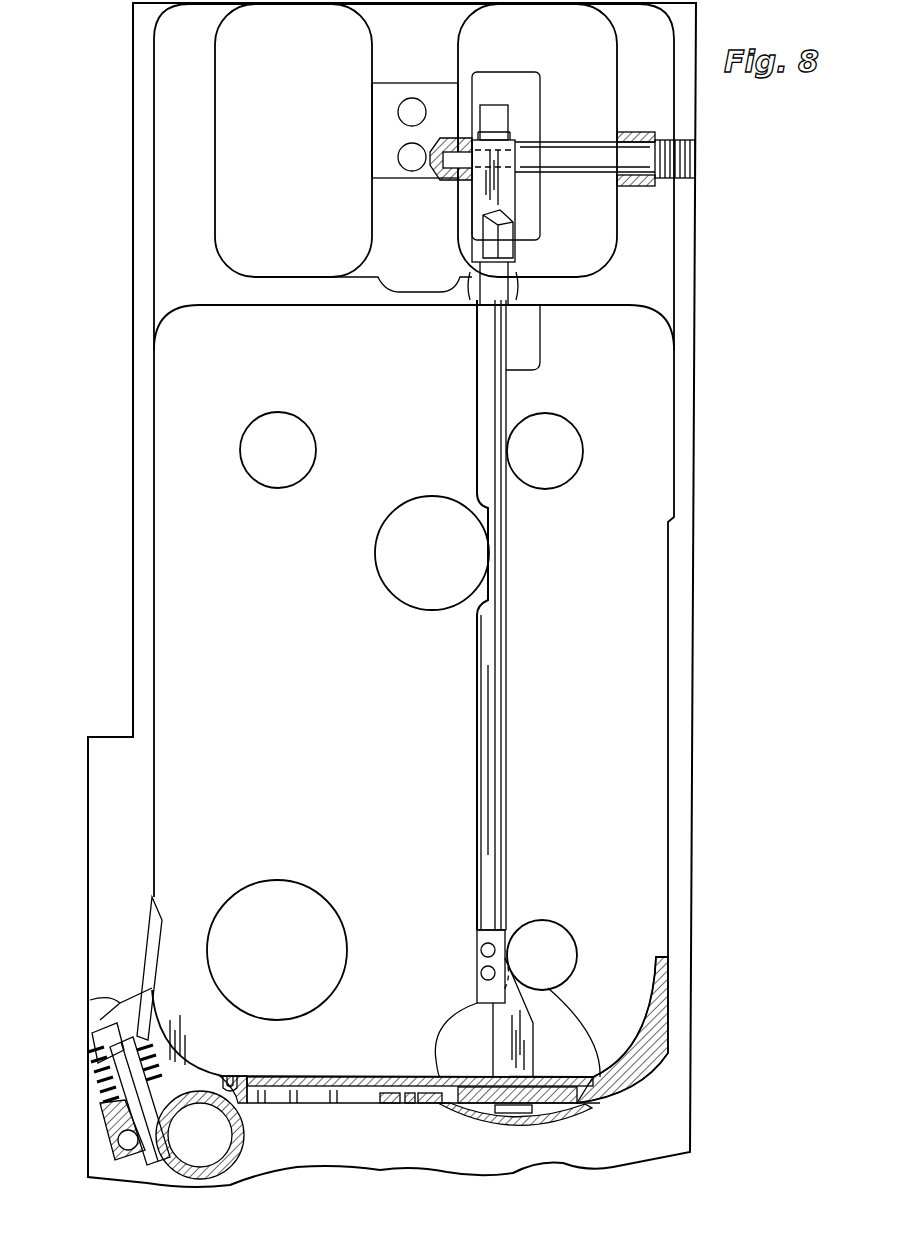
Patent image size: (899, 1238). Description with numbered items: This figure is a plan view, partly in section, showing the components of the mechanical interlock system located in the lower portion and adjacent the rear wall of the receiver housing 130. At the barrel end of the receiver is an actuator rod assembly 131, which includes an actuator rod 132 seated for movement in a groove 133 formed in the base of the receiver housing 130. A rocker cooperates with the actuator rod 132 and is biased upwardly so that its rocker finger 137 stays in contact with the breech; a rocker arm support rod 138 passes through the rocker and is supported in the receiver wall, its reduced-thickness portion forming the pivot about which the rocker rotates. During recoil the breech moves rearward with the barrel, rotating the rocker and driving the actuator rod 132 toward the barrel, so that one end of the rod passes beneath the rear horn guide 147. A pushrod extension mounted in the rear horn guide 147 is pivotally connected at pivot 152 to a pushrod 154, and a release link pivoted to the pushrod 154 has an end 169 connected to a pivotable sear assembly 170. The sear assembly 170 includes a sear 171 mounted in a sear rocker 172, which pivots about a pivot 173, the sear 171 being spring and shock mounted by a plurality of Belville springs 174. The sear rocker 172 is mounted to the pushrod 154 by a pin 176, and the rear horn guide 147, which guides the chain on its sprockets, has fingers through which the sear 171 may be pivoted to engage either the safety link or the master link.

The receiver housing 130 is at (683, 762).
The actuator rod assembly 131 is at (706, 157).
The actuator rod 132 is at (497, 678).
The groove 133 is at (475, 660).
The rocker finger 137 is at (518, 232).
The rocker arm support rod 138 is at (573, 147).
The rear horn guide 147 is at (652, 1022).
The pivot 152 is at (442, 1104).
The pushrod 154 is at (352, 1090).
The end 169 is at (262, 1080).
The sear assembly 170 is at (116, 990).
The sear 171 is at (145, 1005).
The sear rocker 172 is at (113, 1146).
The pivot 173 is at (215, 1137).
The Belville springs 174 is at (96, 1079).
The pin 176 is at (232, 1075).